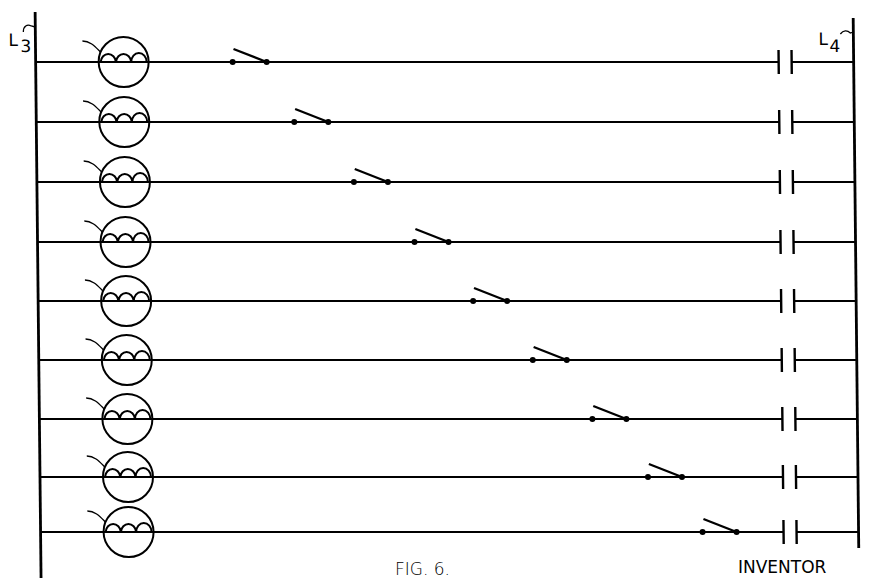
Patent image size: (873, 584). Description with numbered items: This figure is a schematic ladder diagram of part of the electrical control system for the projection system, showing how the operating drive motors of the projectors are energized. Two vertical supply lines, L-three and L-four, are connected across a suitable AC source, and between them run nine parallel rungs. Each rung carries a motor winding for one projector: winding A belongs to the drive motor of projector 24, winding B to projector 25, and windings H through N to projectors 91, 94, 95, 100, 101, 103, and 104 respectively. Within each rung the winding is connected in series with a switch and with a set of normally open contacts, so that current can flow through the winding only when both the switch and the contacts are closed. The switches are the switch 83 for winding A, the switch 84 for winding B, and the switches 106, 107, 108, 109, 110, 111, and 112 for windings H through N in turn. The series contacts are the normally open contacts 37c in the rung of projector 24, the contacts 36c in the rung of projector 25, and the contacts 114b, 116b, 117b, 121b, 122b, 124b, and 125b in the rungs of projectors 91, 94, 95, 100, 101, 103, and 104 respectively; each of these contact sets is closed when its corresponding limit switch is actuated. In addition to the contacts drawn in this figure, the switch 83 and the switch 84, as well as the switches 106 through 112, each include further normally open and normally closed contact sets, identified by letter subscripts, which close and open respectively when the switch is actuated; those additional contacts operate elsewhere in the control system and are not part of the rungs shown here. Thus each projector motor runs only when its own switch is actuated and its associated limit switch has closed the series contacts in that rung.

The projector 24 is at (145, 48).
The projector 25 is at (145, 108).
The projector 91 is at (145, 168).
The projector 94 is at (145, 228).
The projector 95 is at (145, 287).
The projector 100 is at (145, 346).
The projector 101 is at (145, 405).
The projector 103 is at (145, 463).
The projector 104 is at (145, 518).
The switch 83 is at (250, 56).
The switch 84 is at (311, 116).
The switch 106 is at (370, 176).
The switch 107 is at (430, 236).
The switch 108 is at (488, 295).
The switch 109 is at (547, 354).
The switch 110 is at (606, 413).
The switch 111 is at (661, 471).
The switch 112 is at (715, 526).
The normally open contacts 37c is at (779, 50).
The normally open contacts 36c is at (779, 110).
The normally open contacts 114b is at (779, 170).
The normally open contacts 116b is at (779, 230).
The normally open contacts 117b is at (779, 289).
The normally open contacts 121b is at (779, 348).
The normally open contacts 122b is at (779, 407).
The normally open contacts 124b is at (778, 465).
The normally open contacts 125b is at (779, 520).